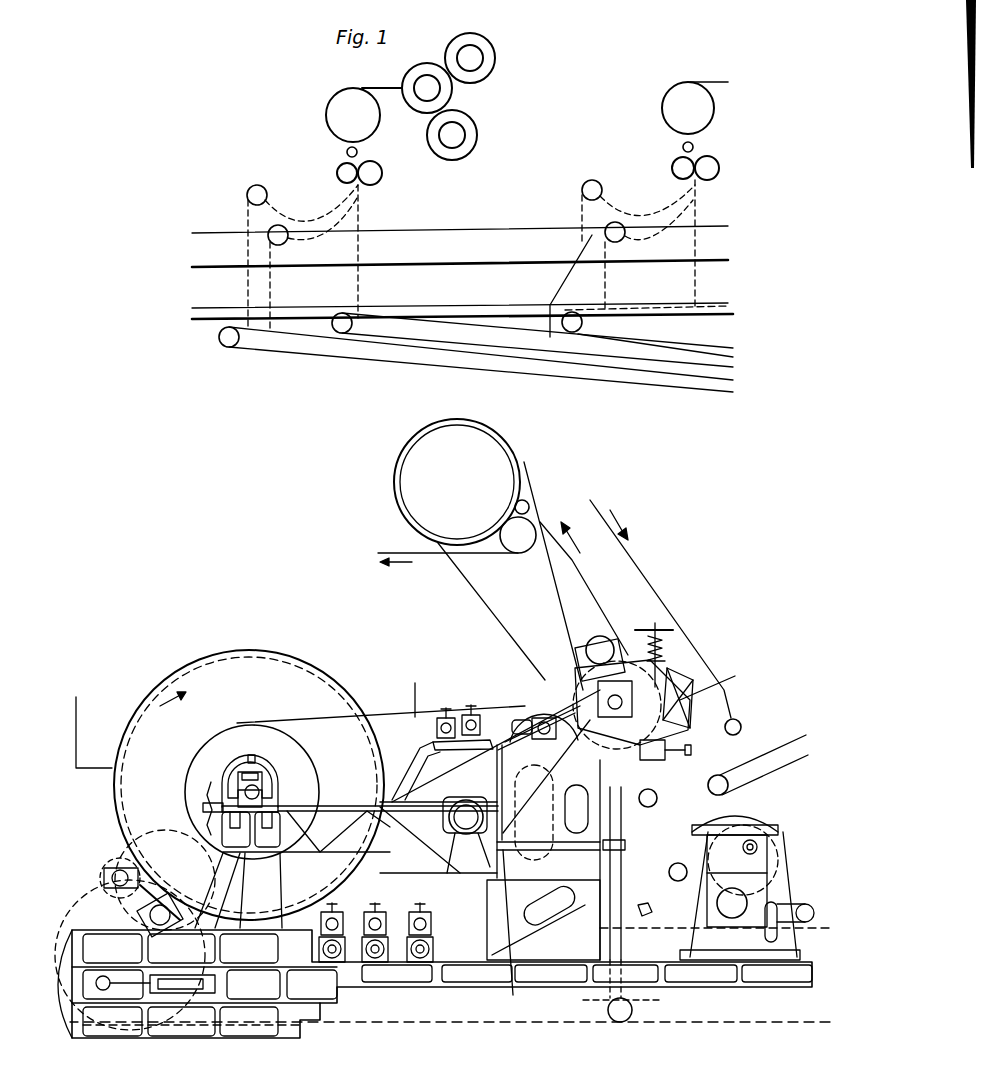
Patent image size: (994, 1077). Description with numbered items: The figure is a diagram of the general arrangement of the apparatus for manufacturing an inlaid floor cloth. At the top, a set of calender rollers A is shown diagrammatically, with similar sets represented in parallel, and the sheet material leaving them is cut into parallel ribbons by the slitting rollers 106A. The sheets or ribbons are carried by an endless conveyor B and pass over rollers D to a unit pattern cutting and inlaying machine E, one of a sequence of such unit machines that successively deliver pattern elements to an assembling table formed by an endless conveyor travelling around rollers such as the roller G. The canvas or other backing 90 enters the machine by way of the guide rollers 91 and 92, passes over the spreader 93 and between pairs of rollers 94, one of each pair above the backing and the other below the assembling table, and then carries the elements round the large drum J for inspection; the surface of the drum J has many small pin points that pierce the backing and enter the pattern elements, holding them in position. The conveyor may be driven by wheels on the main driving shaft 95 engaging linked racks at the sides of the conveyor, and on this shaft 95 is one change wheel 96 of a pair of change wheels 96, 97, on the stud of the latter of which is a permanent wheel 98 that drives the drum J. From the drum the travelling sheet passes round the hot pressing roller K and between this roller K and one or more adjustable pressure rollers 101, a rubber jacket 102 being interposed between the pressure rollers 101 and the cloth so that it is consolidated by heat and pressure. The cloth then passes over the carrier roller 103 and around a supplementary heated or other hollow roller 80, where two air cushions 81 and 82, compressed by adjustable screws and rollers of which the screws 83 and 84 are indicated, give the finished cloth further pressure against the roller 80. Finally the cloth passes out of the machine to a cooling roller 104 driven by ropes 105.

The set of calender rollers A is at (404, 86).
The slitting rollers 106A is at (338, 172).
The endless conveyor B is at (450, 367).
The cooling roller 104 is at (457, 482).
The ropes 105 is at (472, 587).
The supplementary roller 80 is at (580, 687).
The canvas or other backing 90 is at (590, 500).
The large drum J is at (306, 655).
The rubber jacket 102 is at (532, 726).
The carrier roller 103 is at (548, 702).
The air cushion 82 is at (630, 743).
The adjustable screw 83 is at (686, 664).
The air cushion 81 is at (719, 680).
The adjustable screw 84 is at (692, 750).
The guide roller 91 is at (740, 722).
The rollers D is at (711, 788).
The guide roller 92 is at (650, 905).
The spreader 93 is at (647, 913).
The unit pattern cutting and inlaying machine E is at (747, 878).
The roller G is at (66, 968).
The hot pressing roller K is at (526, 920).
The adjustable pressure rollers 101 is at (512, 932).
The pairs of rollers 94 is at (420, 952).
The change wheel 97 is at (110, 855).
The permanent wheel 98 is at (132, 868).
The change wheel 96 is at (130, 937).
The main driving shaft 95 is at (170, 926).